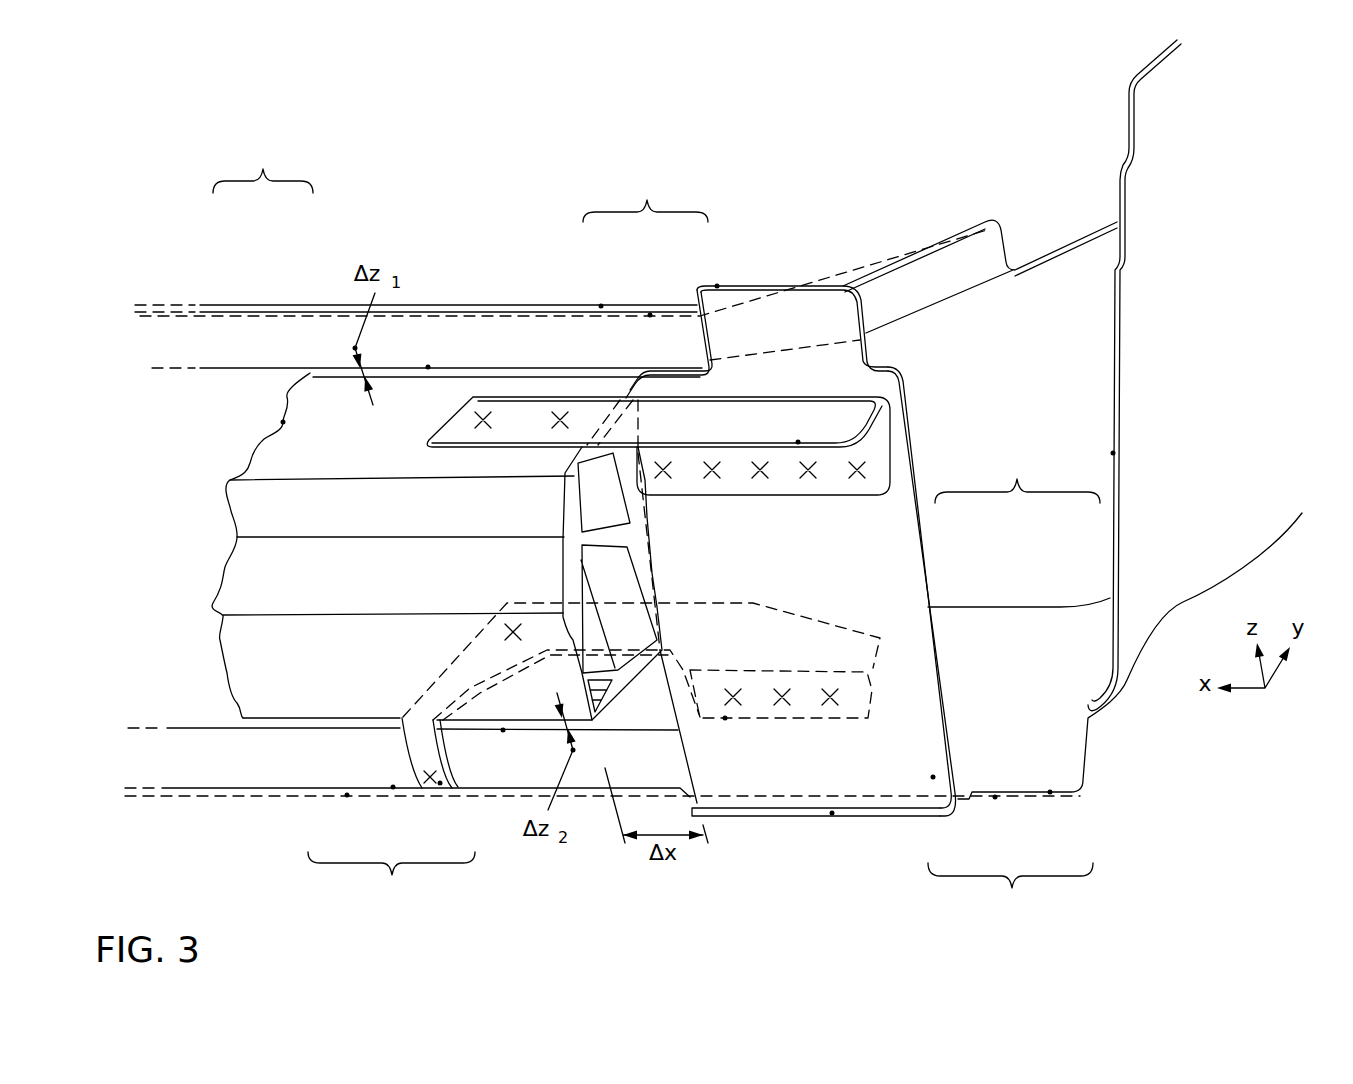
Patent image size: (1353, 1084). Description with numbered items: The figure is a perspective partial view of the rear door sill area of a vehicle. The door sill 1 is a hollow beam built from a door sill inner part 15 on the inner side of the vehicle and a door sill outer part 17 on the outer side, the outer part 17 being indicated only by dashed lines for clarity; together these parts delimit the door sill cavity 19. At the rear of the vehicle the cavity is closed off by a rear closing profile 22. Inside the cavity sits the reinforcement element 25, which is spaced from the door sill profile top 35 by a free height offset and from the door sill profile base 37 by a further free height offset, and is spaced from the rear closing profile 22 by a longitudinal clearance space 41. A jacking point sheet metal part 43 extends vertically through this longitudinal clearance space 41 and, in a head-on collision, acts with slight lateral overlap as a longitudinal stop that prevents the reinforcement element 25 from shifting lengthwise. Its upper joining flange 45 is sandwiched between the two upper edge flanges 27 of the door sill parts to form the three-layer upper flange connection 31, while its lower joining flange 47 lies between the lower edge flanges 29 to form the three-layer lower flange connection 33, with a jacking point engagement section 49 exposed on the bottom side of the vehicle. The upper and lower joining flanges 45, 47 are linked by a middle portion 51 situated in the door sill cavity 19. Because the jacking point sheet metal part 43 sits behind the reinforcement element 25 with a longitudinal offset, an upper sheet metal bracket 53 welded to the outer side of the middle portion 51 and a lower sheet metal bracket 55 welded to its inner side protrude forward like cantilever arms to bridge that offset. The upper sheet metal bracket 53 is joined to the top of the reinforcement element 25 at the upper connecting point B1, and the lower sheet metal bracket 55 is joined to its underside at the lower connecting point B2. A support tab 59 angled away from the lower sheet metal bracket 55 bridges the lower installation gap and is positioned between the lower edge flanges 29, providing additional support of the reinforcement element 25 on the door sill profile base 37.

The door sill 1 is at (263, 165).
The door sill inner part 15 is at (254, 292).
The door sill outer part 17 is at (286, 301).
The door sill cavity 19 is at (160, 516).
The rear closing profile 22 is at (1113, 453).
The reinforcement element 25 is at (283, 422).
The upper edge flanges 27 is at (650, 315).
The lower edge flanges 29 is at (1050, 792).
The upper flange connection 31 is at (645, 193).
The lower flange connection 33 is at (700, 886).
The door sill profile top 35 is at (428, 367).
The door sill profile base 37 is at (503, 730).
The longitudinal clearance space 41 is at (1019, 526).
The jacking point sheet metal part 43 is at (918, 421).
The upper joining flange 45 is at (717, 286).
The lower joining flange 47 is at (933, 777).
The jacking point engagement section 49 is at (832, 813).
The middle portion 51 is at (784, 575).
The upper sheet metal bracket 53 is at (798, 442).
The lower sheet metal bracket 55 is at (725, 718).
The support tab 59 is at (440, 783).
The upper connecting point B1 is at (560, 420).
The lower connecting point B2 is at (513, 632).